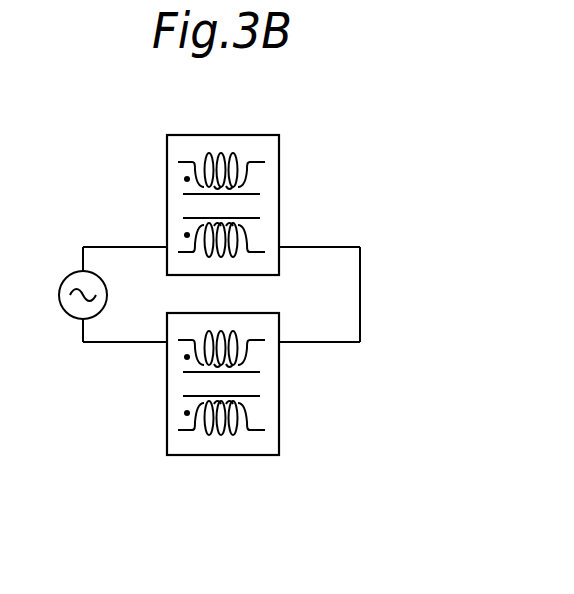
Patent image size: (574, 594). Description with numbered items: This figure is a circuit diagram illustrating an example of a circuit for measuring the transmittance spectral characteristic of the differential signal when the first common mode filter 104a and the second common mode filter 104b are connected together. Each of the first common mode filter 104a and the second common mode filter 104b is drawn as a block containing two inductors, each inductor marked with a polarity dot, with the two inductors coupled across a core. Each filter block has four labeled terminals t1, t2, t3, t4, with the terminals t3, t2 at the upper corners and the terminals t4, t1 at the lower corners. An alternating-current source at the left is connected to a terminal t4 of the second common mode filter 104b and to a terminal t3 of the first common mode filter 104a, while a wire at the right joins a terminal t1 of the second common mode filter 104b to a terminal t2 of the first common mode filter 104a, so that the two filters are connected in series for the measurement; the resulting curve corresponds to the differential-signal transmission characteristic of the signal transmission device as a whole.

The first common mode filter 104a is at (223, 414).
The second common mode filter 104b is at (250, 141).
The first terminal t1 is at (319, 349).
The second terminal t2 is at (319, 240).
The third terminal t3 is at (125, 240).
The fourth terminal t4 is at (125, 349).